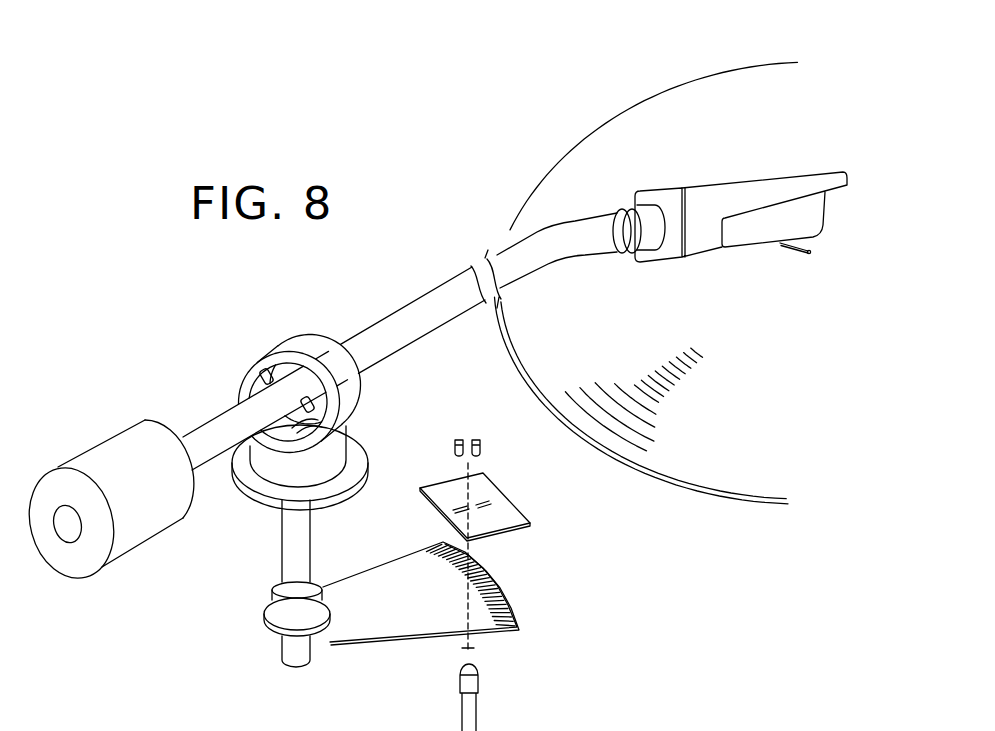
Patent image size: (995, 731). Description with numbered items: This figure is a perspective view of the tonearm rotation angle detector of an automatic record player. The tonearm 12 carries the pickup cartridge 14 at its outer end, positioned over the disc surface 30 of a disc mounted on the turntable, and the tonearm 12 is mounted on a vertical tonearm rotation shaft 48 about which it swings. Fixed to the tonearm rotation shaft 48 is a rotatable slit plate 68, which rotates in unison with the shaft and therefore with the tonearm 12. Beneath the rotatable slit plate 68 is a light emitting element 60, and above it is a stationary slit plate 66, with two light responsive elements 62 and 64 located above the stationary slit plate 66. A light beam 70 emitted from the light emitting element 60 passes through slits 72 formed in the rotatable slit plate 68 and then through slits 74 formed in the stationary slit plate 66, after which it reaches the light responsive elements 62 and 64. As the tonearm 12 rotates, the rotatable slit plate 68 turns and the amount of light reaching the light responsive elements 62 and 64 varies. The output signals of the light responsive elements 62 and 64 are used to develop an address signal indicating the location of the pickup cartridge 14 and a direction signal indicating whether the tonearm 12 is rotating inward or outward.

The tonearm 12 is at (383, 330).
The pickup cartridge 14 is at (716, 203).
The disc surface 30 is at (598, 145).
The tonearm rotation shaft 48 is at (292, 549).
The light emitting element 60 is at (480, 682).
The light responsive element 62 is at (453, 442).
The light responsive element 64 is at (482, 443).
The stationary slit plate 66 is at (512, 514).
The rotatable slit plate 68 is at (403, 570).
The light beam 70 is at (475, 647).
The slits 72 is at (507, 600).
The slits 74 is at (491, 503).